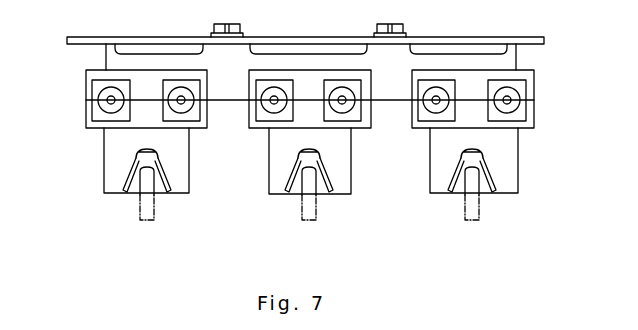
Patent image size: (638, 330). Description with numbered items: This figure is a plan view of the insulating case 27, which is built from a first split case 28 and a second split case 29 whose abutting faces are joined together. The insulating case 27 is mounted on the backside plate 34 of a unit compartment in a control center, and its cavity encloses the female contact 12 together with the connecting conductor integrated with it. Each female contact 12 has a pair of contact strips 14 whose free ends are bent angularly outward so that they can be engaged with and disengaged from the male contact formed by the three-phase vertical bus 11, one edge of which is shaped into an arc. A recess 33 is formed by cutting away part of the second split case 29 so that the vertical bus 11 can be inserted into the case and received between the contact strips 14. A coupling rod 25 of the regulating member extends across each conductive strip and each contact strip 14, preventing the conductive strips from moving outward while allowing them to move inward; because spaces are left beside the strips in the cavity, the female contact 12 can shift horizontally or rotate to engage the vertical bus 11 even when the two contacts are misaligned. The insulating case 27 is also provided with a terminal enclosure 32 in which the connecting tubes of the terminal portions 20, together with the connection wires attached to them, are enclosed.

The vertical bus 11 is at (155, 213).
The female contact 12 is at (128, 184).
The contact strips 14 is at (170, 192).
The terminal portions 20 is at (107, 105).
The coupling rod 25 is at (142, 150).
The insulating case 27 is at (545, 124).
The first split case 28 is at (517, 62).
The second split case 29 is at (104, 170).
The terminal enclosure 32 is at (98, 87).
The recess 33 is at (158, 152).
The backside plate 34 is at (187, 37).